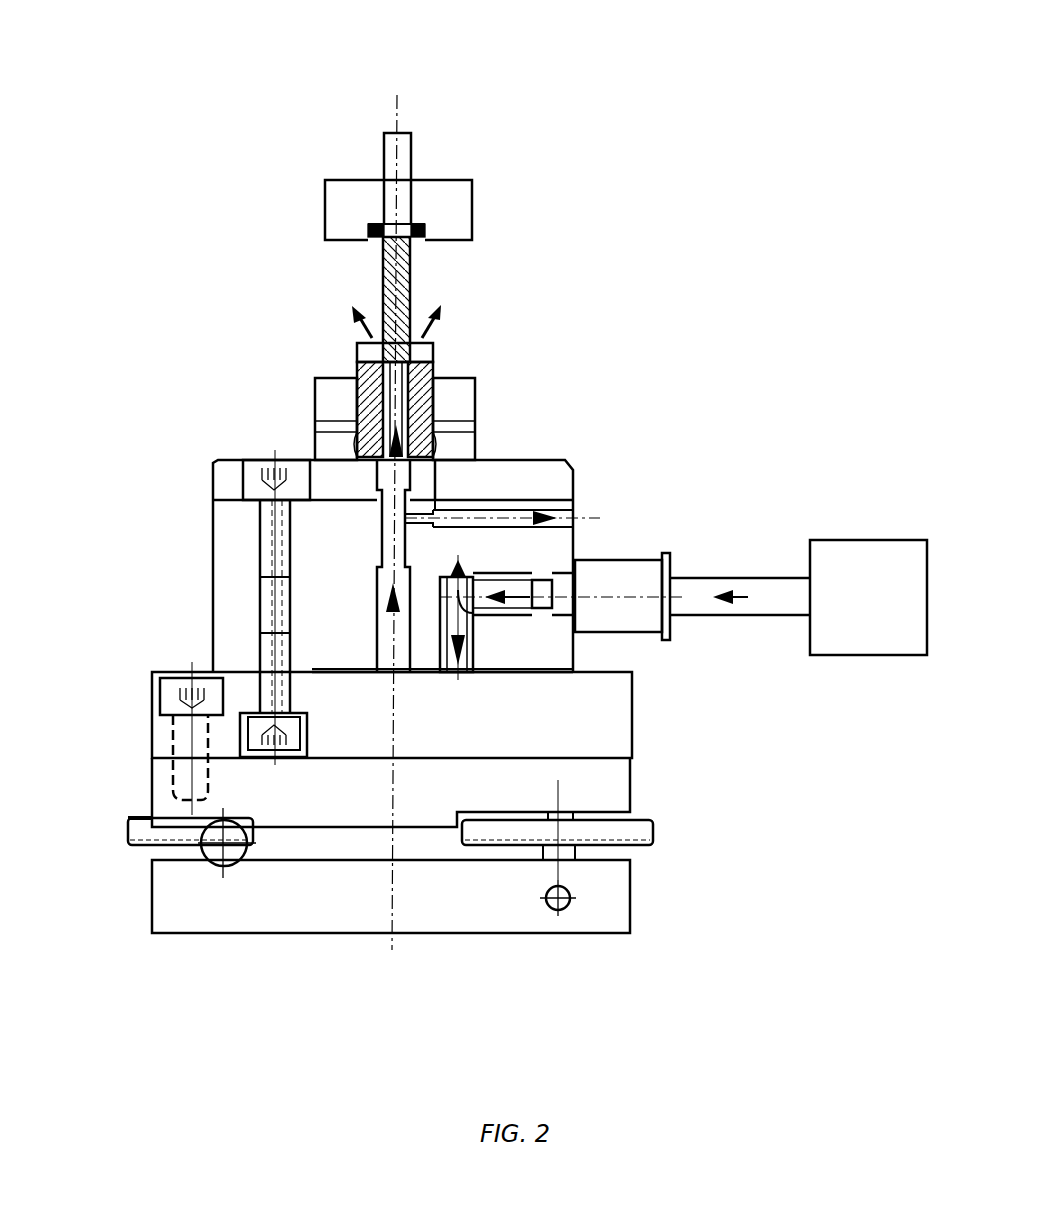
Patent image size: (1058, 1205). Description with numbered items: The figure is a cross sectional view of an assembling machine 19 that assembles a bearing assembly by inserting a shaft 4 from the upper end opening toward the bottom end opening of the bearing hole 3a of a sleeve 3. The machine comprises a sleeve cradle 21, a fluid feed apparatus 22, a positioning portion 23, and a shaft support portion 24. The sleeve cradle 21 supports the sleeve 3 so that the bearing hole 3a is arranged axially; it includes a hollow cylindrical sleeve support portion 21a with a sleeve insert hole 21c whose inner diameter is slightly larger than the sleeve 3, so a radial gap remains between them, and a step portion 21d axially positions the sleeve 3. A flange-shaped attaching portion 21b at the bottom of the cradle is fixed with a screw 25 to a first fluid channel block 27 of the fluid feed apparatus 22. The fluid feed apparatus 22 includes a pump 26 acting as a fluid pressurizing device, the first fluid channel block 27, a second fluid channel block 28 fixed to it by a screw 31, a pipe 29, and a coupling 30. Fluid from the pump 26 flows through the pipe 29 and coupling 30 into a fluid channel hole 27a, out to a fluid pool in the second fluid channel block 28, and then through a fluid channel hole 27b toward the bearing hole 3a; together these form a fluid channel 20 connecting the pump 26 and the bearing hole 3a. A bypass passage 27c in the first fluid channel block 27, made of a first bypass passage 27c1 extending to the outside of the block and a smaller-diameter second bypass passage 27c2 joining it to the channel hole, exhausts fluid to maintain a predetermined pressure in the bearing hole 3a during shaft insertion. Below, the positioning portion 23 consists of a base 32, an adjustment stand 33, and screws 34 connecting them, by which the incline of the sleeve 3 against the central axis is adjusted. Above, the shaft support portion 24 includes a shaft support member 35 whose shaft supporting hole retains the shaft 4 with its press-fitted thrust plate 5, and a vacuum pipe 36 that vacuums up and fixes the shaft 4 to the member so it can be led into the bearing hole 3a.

The assembling machine 19 is at (742, 198).
The shaft support portion 24 is at (516, 164).
The vacuum pipe 36 is at (413, 147).
The shaft support member 35 is at (472, 216).
The thrust plate 5 is at (378, 238).
The shaft 4 is at (410, 262).
The sleeve 3 is at (437, 352).
The bearing hole 3a is at (387, 385).
The sleeve cradle 21 is at (315, 385).
The sleeve support portion 21a is at (458, 390).
The attaching portion 21b is at (212, 480).
The sleeve insert hole 21c is at (362, 428).
The step portion 21d is at (475, 418).
The fluid feed apparatus 22 is at (764, 473).
The first fluid channel block 27 is at (215, 602).
The fluid channel hole 27a is at (503, 607).
The fluid channel hole 27b is at (398, 647).
The bypass passage 27c is at (640, 405).
The first bypass passage 27c1 is at (515, 507).
The second bypass passage 27c2 is at (412, 497).
The screw 25 is at (253, 530).
The fluid channel 20 is at (830, 712).
The coupling 30 is at (673, 627).
The pipe 29 is at (777, 617).
The pump 26 is at (878, 540).
The positioning portion 23 is at (93, 828).
The screw 31 is at (255, 647).
The second fluid channel block 28 is at (152, 697).
The adjustment stand 33 is at (152, 785).
The screws 34 is at (130, 845).
The base 32 is at (240, 935).